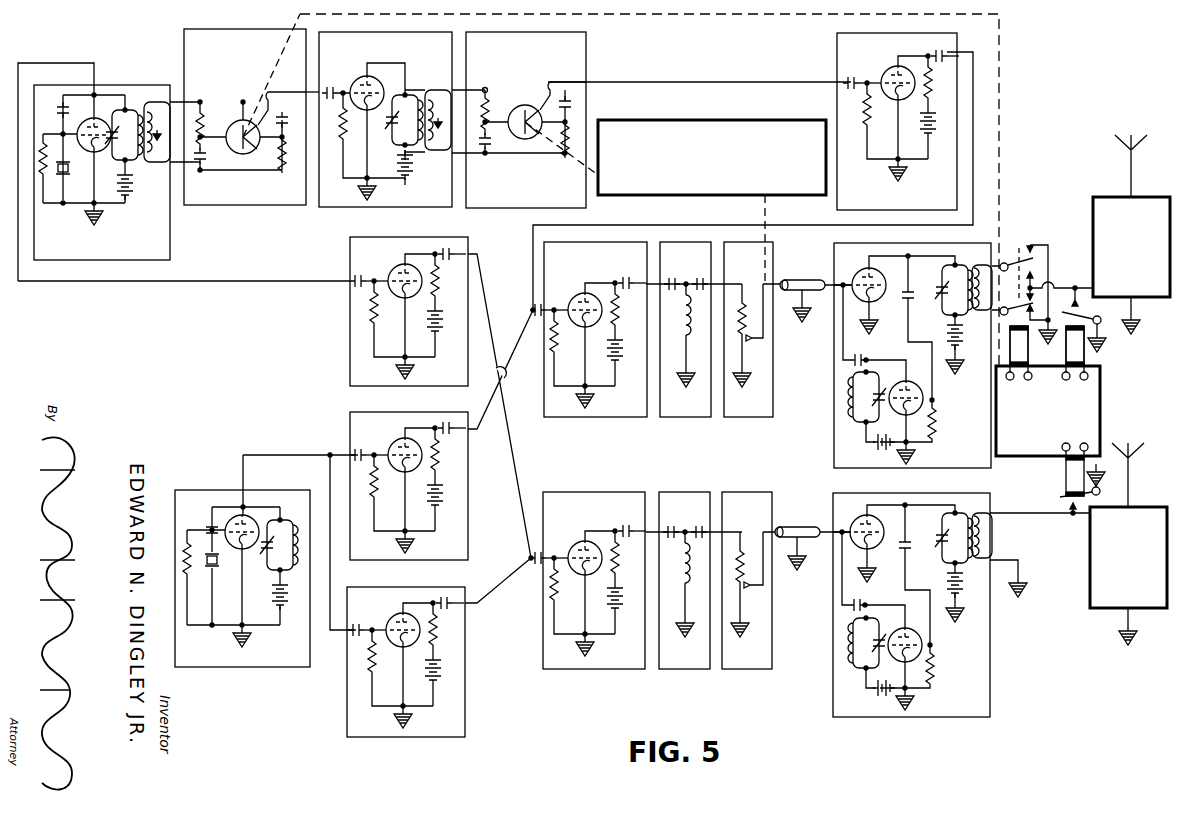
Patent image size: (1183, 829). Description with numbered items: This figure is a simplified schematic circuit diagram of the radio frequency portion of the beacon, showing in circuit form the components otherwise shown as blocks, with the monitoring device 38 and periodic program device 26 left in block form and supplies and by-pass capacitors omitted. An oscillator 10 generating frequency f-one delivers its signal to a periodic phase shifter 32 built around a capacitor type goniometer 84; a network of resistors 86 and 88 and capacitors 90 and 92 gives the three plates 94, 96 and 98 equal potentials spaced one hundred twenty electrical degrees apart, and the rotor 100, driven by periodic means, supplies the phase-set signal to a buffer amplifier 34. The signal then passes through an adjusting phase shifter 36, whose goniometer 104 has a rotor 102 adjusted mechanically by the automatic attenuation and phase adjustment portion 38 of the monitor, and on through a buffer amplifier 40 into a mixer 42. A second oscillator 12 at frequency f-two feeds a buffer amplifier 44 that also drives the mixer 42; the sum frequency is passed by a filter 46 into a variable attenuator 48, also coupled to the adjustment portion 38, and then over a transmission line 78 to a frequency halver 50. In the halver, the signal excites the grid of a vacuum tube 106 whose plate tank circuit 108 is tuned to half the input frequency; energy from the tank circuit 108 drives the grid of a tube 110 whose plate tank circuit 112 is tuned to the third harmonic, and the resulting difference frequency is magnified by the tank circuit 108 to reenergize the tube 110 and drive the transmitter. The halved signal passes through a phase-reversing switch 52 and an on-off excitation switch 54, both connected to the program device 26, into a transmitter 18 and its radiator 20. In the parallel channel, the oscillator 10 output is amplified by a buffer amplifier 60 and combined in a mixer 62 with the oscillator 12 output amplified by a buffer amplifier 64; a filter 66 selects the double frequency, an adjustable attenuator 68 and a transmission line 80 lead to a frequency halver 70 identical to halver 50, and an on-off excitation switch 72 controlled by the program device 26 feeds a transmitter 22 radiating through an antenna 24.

The oscillator 10 is at (122, 84).
The oscillator 12 is at (210, 490).
The transmitter 18 is at (1113, 196).
The radiator 20 is at (1140, 142).
The transmitter 22 is at (1090, 572).
The antenna 24 is at (1138, 445).
The periodic program device 26 is at (1035, 456).
The periodic phase shifter 32 is at (244, 132).
The buffer amplifier 34 is at (348, 207).
The adjusting phase shifter 36 is at (526, 134).
The automatic attenuation and phase adjustment portion 38 is at (700, 120).
The buffer amplifier 40 is at (837, 110).
The mixer 42 is at (598, 417).
The buffer amplifier 44 is at (350, 428).
The filter 46 is at (686, 417).
The variable attenuator 48 is at (750, 417).
The frequency halver 50 is at (897, 355).
The phase-reversing switch 52 is at (1046, 277).
The on-off excitation switch 54 is at (1078, 310).
The buffer amplifier 60 is at (350, 300).
The mixer 62 is at (578, 492).
The buffer amplifier 64 is at (465, 656).
The filter 66 is at (670, 492).
The adjustable attenuator 68 is at (732, 492).
The frequency halver 70 is at (905, 494).
The on-off excitation switch 72 is at (1064, 488).
The transmission line 78 is at (802, 280).
The transmission line 80 is at (797, 527).
The capacitor type goniometer 84 is at (241, 77).
The resistor 86 is at (198, 122).
The resistor 88 is at (286, 160).
The capacitor 90 is at (198, 160).
The capacitor 92 is at (286, 115).
The plate 94 is at (240, 122).
The plate 96 is at (252, 150).
The plate 98 is at (236, 150).
The rotor 100 is at (244, 154).
The rotor 102 is at (525, 104).
The goniometer 104 is at (526, 173).
The vacuum tube 106 is at (882, 298).
The plate tank circuit 108 is at (963, 311).
The tube 110 is at (922, 390).
The plate tank circuit 112 is at (861, 408).